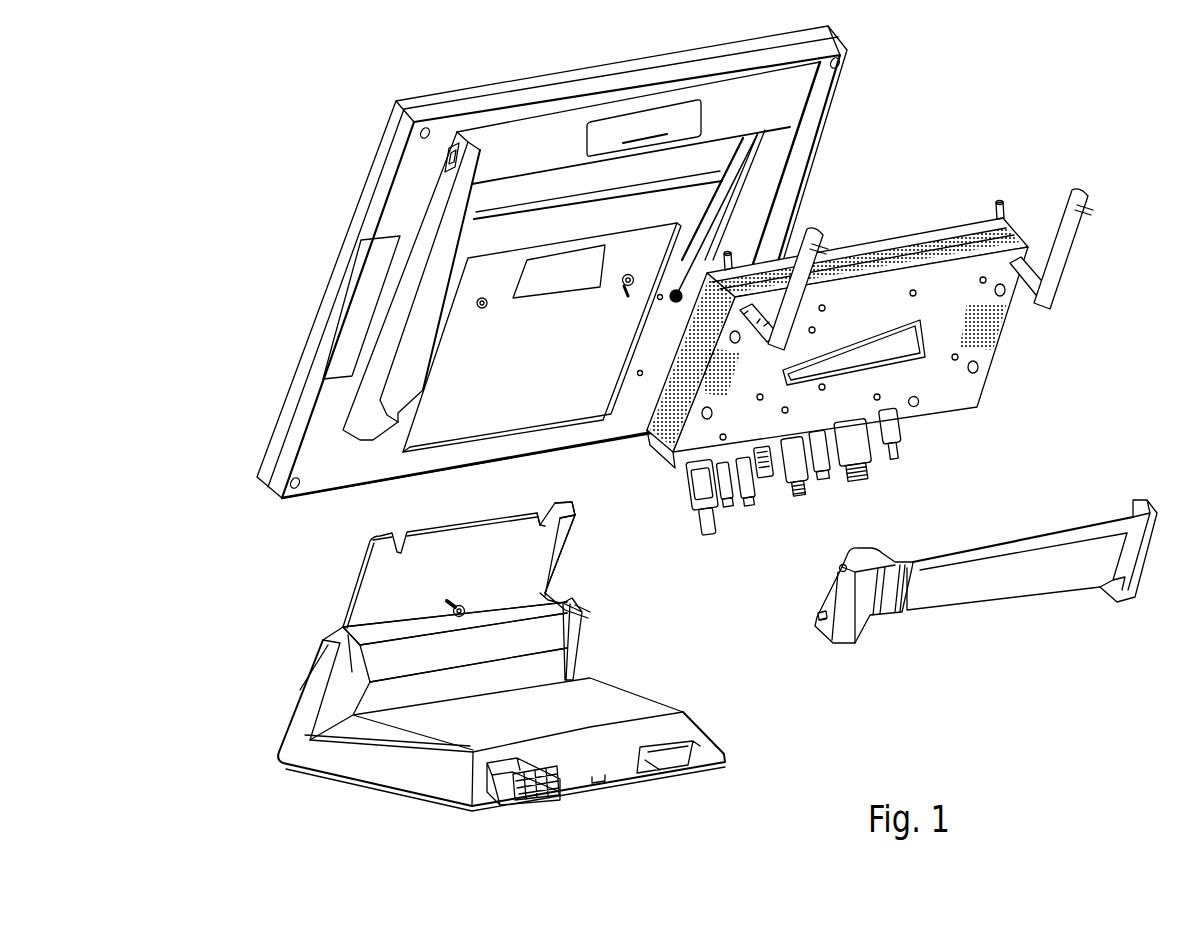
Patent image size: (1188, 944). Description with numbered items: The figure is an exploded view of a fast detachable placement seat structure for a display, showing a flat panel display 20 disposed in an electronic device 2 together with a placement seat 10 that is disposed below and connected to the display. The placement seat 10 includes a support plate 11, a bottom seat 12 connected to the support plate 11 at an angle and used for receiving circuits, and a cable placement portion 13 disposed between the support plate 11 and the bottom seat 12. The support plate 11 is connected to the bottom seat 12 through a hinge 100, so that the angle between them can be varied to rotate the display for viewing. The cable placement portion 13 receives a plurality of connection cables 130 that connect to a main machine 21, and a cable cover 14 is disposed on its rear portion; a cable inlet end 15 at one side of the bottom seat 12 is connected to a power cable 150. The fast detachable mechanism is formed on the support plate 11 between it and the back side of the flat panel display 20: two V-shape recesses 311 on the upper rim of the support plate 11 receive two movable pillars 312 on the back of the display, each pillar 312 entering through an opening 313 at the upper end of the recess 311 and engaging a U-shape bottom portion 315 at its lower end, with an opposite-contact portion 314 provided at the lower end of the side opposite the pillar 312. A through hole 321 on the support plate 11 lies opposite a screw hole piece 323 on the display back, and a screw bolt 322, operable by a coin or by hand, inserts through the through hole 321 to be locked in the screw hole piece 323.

The electronic device 2 is at (902, 90).
The flat panel display 20 is at (373, 177).
The main machine 21 is at (967, 388).
The placement seat 10 is at (700, 696).
The support plate 11 is at (373, 570).
The bottom seat 12 is at (295, 742).
The cable placement portion 13 is at (562, 604).
The cable cover 14 is at (1023, 578).
The cable inlet end 15 is at (500, 798).
The hinge 100 is at (587, 626).
The connection cables 130 is at (901, 480).
The power cable 150 is at (547, 793).
The recess 311 is at (573, 510).
The pillar 312 is at (625, 292).
The opening 313 is at (540, 520).
The opposite-contact portion 314 is at (625, 285).
The U-shape bottom portion 315 is at (565, 530).
The through hole 321 is at (455, 608).
The screw bolt 322 is at (447, 612).
The screw hole piece 323 is at (528, 355).